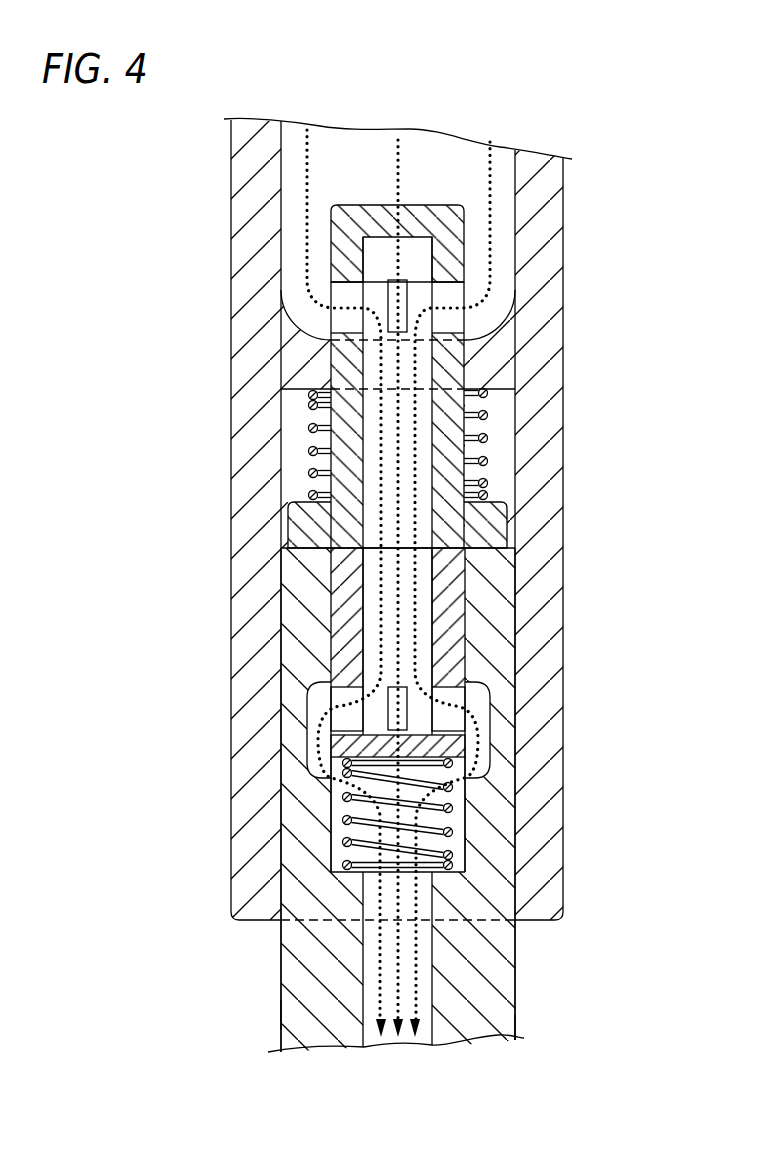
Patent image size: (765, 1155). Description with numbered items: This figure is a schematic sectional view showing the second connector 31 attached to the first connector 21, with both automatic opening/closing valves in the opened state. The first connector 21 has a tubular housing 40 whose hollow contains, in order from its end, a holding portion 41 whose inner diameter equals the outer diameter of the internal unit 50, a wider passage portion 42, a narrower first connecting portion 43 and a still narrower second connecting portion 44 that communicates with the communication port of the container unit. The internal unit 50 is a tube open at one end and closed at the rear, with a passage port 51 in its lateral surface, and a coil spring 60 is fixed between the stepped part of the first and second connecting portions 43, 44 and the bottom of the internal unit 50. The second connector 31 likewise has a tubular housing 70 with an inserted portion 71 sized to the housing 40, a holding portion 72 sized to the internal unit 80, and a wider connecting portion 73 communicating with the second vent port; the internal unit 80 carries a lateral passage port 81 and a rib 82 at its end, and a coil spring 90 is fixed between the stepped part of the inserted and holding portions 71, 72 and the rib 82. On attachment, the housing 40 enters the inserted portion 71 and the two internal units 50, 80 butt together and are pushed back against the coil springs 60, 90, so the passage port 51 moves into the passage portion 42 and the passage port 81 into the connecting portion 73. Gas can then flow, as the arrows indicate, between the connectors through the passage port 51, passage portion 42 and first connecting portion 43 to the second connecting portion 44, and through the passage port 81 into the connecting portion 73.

The first connector 21 is at (280, 1013).
The second connector 31 is at (565, 178).
The housing 40 is at (492, 972).
The holding portion 41 is at (345, 640).
The passage portion 42 is at (318, 703).
The first connecting portion 43 is at (340, 835).
The second connecting portion 44 is at (370, 1000).
The internal unit 50 is at (345, 573).
The passage port 51 is at (403, 700).
The coil spring 60 is at (455, 829).
The housing 70 is at (564, 395).
The inserted portion 71 is at (492, 657).
The holding portion 72 is at (458, 362).
The connecting portion 73 is at (499, 213).
The internal unit 80 is at (452, 455).
The passage port 81 is at (405, 293).
The rib 82 is at (495, 525).
The coil spring 90 is at (487, 462).